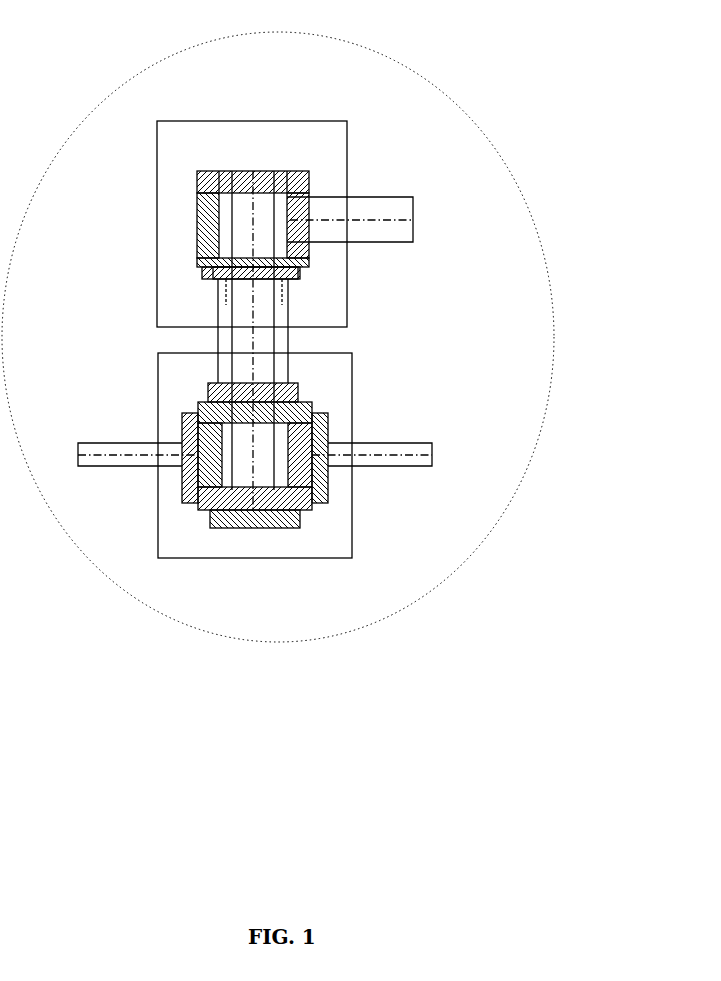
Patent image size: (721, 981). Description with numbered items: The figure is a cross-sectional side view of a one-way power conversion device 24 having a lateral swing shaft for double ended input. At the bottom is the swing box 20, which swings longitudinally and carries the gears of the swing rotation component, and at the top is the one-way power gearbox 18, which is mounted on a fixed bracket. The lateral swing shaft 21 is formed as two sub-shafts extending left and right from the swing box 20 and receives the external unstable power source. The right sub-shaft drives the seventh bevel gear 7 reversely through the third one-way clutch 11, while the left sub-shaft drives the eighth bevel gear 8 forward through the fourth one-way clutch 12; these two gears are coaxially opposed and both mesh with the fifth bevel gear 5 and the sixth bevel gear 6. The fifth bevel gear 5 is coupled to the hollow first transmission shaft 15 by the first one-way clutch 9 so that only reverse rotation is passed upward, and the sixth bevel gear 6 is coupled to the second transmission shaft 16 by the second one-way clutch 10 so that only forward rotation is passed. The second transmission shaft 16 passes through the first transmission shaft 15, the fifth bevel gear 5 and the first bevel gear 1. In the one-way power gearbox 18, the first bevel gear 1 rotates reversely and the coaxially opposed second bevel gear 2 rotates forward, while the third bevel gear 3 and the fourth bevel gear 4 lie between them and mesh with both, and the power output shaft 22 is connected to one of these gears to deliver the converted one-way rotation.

The first bevel gear 1 is at (292, 277).
The second bevel gear 2 is at (253, 210).
The third bevel gear 3 is at (303, 190).
The fourth bevel gear 4 is at (207, 208).
The fifth bevel gear 5 is at (283, 412).
The sixth bevel gear 6 is at (300, 508).
The seventh bevel gear 7 is at (305, 412).
The eighth bevel gear 8 is at (207, 417).
The first one-way clutch 9 is at (295, 392).
The second one-way clutch 10 is at (225, 523).
The third one-way clutch 11 is at (323, 438).
The fourth one-way clutch 12 is at (190, 432).
The first transmission shaft 15 is at (218, 343).
The second transmission shaft 16 is at (282, 173).
The one-way power gearbox 18 is at (343, 275).
The swing box 20 is at (350, 510).
The lateral swing shaft 21 is at (138, 462).
The power output shaft 22 is at (392, 210).
The one-way power conversion device 24 is at (296, 33).